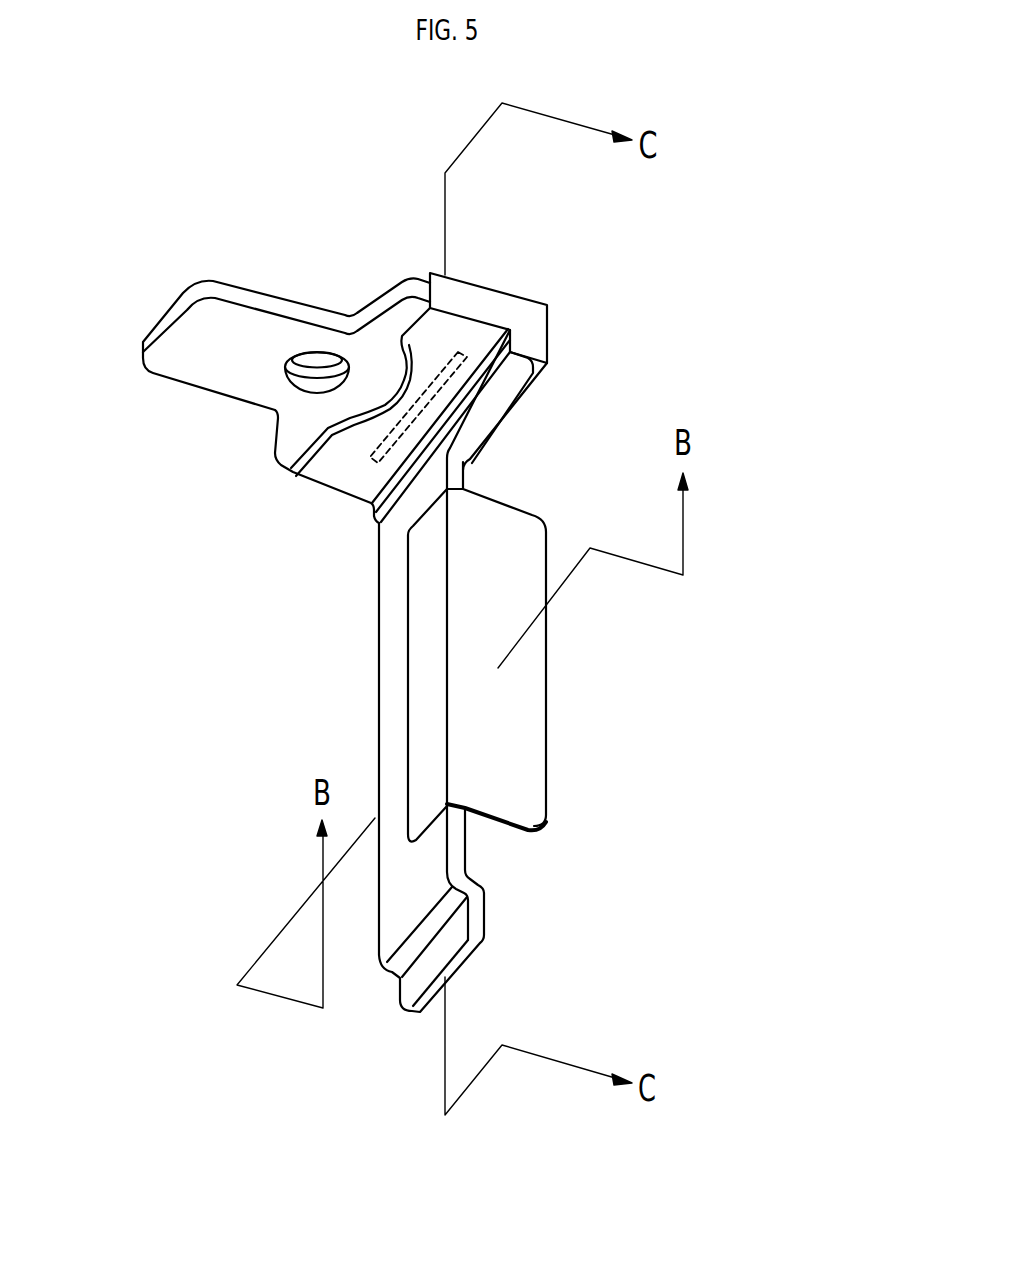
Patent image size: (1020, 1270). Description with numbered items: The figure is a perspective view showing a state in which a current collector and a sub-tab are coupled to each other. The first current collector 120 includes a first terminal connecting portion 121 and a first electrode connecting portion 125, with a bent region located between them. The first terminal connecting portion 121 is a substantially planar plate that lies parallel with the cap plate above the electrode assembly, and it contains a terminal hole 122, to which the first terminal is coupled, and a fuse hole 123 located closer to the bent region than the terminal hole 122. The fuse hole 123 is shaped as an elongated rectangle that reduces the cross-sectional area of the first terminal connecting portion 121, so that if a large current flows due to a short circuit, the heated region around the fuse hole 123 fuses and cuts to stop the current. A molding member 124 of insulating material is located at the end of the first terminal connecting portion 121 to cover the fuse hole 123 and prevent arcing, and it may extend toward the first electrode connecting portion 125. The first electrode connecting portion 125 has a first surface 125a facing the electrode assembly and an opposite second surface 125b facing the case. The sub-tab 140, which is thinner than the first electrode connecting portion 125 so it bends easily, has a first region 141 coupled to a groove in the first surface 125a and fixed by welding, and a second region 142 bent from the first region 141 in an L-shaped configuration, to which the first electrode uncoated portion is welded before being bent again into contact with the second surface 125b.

The first current collector 120 is at (162, 277).
The first terminal connecting portion 121 is at (256, 322).
The terminal hole 122 is at (342, 352).
The fuse hole 123 is at (428, 384).
The molding member 124 is at (535, 320).
The first electrode connecting portion 125 is at (386, 633).
The first surface 125a is at (450, 870).
The second surface 125b is at (463, 841).
The sub-tab 140 is at (697, 705).
The first region 141 is at (425, 725).
The second region 142 is at (513, 778).